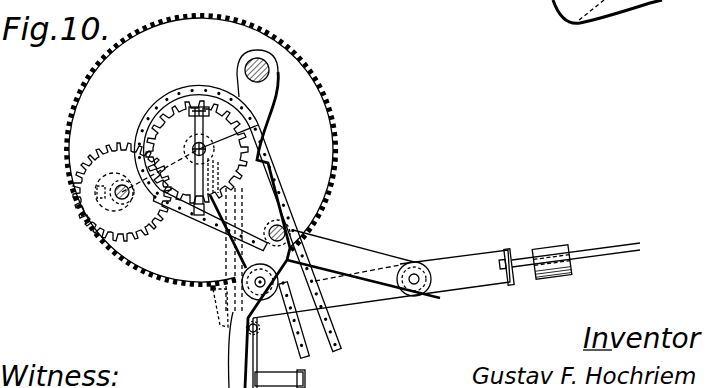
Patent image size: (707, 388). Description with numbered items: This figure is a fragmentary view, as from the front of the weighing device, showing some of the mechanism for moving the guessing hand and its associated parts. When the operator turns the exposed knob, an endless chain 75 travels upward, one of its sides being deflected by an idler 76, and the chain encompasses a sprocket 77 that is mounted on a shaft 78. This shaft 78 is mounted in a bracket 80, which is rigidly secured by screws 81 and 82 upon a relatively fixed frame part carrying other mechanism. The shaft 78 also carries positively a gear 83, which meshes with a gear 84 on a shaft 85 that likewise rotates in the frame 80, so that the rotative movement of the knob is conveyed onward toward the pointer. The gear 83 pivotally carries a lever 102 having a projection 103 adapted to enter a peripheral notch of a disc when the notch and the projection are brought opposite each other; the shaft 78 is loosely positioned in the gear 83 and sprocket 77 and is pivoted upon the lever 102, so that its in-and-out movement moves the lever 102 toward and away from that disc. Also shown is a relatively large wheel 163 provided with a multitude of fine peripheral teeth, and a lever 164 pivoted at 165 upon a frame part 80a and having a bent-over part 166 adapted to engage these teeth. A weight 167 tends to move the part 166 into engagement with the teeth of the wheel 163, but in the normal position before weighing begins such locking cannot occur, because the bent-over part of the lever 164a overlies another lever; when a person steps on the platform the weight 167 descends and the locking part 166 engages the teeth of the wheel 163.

The endless chain 75 is at (282, 175).
The idler 76 is at (281, 322).
The sprocket 77 is at (160, 112).
The shaft 78 is at (266, 137).
The bracket 80 is at (277, 98).
The frame part 80a is at (368, 250).
The screw 81 is at (266, 69).
The screw 82 is at (292, 222).
The gear 83 is at (143, 123).
The gear 84 is at (90, 225).
The shaft 85 is at (112, 192).
The lever 102 is at (219, 106).
The projection 103 is at (205, 227).
The wheel 163 is at (332, 118).
The lever 164 is at (445, 262).
The bent-over part of the lever 164a is at (507, 255).
The pivot 165 is at (416, 284).
The bent-over part 166 is at (213, 289).
The weight 167 is at (558, 246).